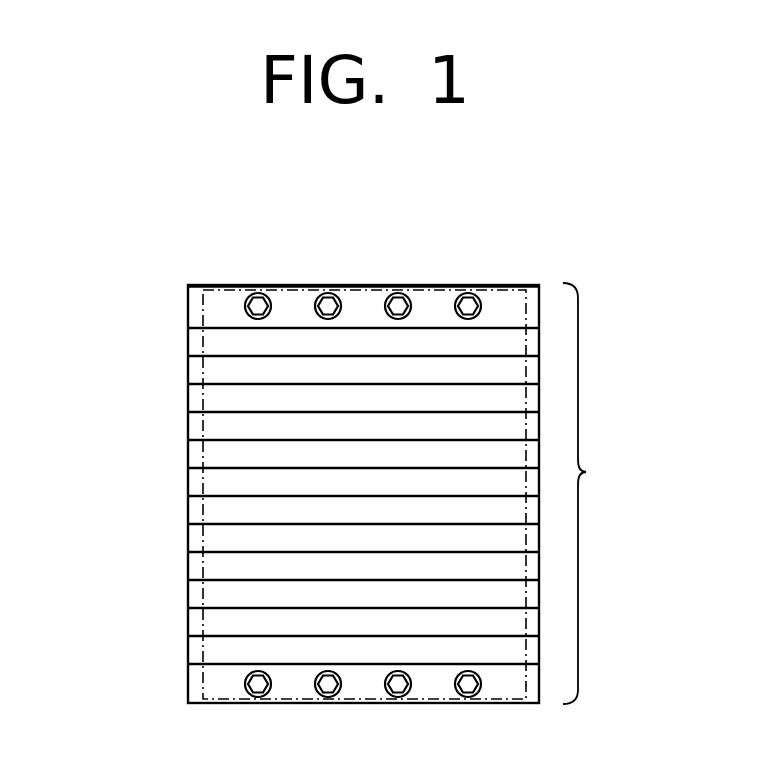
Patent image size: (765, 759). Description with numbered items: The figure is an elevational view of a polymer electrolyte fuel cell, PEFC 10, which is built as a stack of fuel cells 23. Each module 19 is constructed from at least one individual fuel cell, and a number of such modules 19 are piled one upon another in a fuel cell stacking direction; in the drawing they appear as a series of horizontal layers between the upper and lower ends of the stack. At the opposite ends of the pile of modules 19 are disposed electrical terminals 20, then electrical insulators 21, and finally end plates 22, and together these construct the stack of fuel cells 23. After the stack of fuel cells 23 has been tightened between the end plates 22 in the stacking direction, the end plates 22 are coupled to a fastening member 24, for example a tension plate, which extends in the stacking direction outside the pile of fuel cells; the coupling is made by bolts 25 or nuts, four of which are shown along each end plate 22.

The PEFC 10 is at (492, 279).
The module 19 is at (197, 398).
The electrical terminals 20 is at (197, 373).
The electrical insulators 21 is at (197, 343).
The end plates 22 is at (196, 292).
The stack of fuel cells 23 is at (607, 493).
The fastening member 24 is at (198, 674).
The bolts 25 is at (258, 302).